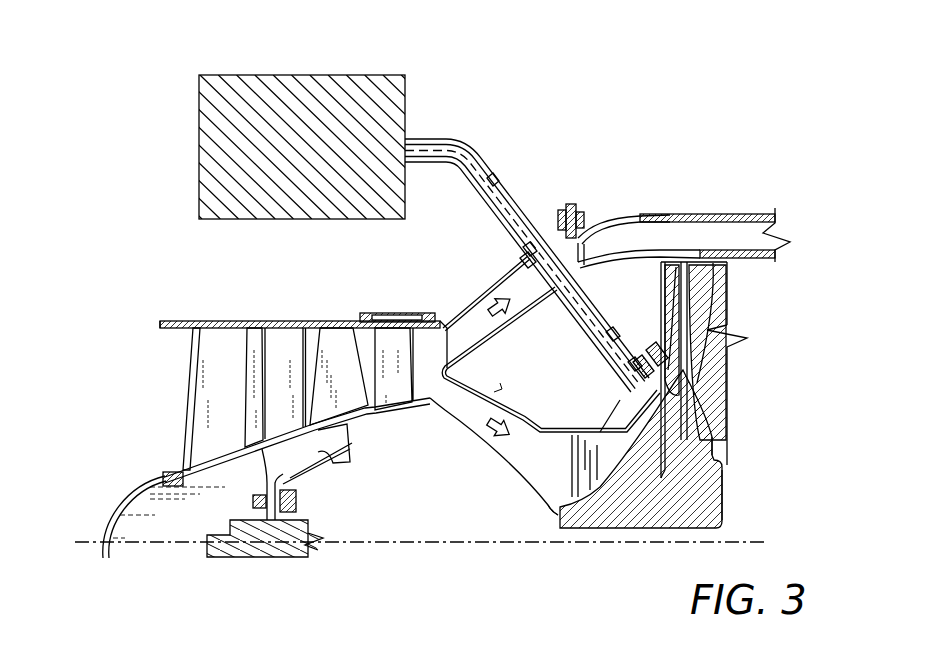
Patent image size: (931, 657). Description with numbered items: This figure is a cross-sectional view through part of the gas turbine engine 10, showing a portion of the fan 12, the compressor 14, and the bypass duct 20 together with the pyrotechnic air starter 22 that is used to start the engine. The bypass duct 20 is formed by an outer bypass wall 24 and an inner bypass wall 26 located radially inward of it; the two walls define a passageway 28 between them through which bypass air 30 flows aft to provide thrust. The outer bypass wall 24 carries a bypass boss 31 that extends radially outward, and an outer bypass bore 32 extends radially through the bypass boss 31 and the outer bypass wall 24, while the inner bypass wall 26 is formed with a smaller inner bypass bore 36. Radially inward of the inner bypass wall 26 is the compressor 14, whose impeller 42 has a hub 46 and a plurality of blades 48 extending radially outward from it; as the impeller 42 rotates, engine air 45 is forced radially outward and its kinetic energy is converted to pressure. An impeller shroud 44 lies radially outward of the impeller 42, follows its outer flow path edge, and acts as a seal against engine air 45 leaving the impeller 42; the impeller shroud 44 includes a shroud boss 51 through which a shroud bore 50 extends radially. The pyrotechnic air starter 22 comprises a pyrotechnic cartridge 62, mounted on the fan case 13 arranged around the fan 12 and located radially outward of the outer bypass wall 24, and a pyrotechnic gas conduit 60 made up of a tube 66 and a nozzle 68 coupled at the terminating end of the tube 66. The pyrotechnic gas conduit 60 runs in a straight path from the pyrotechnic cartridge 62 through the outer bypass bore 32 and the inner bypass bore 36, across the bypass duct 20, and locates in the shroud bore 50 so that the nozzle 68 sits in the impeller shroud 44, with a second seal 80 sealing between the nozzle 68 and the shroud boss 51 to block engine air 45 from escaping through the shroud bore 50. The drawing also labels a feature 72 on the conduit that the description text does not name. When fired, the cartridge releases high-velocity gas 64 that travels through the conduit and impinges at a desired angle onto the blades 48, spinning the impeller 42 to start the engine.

The gas turbine engine 10 is at (772, 122).
The fan 12 is at (176, 405).
The fan case 13 is at (246, 322).
The compressor 14 is at (763, 468).
The bypass duct 20 is at (718, 211).
The pyrotechnic air starter 22 is at (545, 100).
The outer bypass wall 24 is at (460, 322).
The inner bypass wall 26 is at (455, 320).
The passageway 28 is at (751, 233).
The bypass air 30 is at (496, 300).
The bypass boss 31 is at (571, 251).
The outer bypass bore 32 is at (591, 283).
The inner bypass bore 36 is at (605, 302).
The impeller 42 is at (724, 488).
The impeller shroud 44 is at (675, 377).
The engine air 45 is at (443, 393).
The hub 46 is at (703, 500).
The blades 48 is at (572, 492).
The shroud bore 50 is at (700, 430).
The shroud boss 51 is at (632, 380).
The pyrotechnic gas conduit 60 is at (555, 201).
The pyrotechnic cartridge 62 is at (197, 132).
The high-velocity gas 64 is at (488, 170).
The tube 66 is at (620, 335).
The nozzle 68 is at (637, 365).
The pipe segment 72 is at (514, 253).
The second seal 80 is at (658, 394).